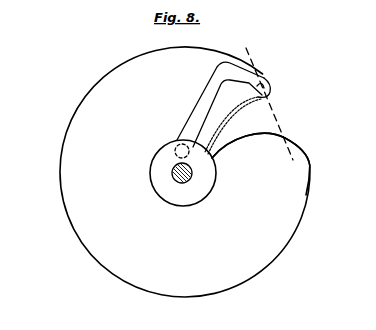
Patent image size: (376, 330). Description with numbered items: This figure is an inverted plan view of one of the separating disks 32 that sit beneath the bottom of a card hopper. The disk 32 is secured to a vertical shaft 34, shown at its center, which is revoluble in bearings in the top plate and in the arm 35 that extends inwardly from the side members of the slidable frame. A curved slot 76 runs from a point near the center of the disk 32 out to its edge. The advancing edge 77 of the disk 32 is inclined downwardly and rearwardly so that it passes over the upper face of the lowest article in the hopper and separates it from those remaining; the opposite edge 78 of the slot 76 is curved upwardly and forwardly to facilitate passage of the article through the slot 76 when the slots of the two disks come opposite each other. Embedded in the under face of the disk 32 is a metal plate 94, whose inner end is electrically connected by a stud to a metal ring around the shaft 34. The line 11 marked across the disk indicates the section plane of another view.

The section line 11 is at (290, 171).
The separating disk 32 is at (60, 168).
The vertical shaft 34 is at (181, 184).
The arm 35 is at (176, 139).
The curved slot 76 is at (243, 135).
The advancing edge 77 is at (272, 95).
The opposite edge of the slot 78 is at (297, 147).
The metal plate 94 is at (200, 92).